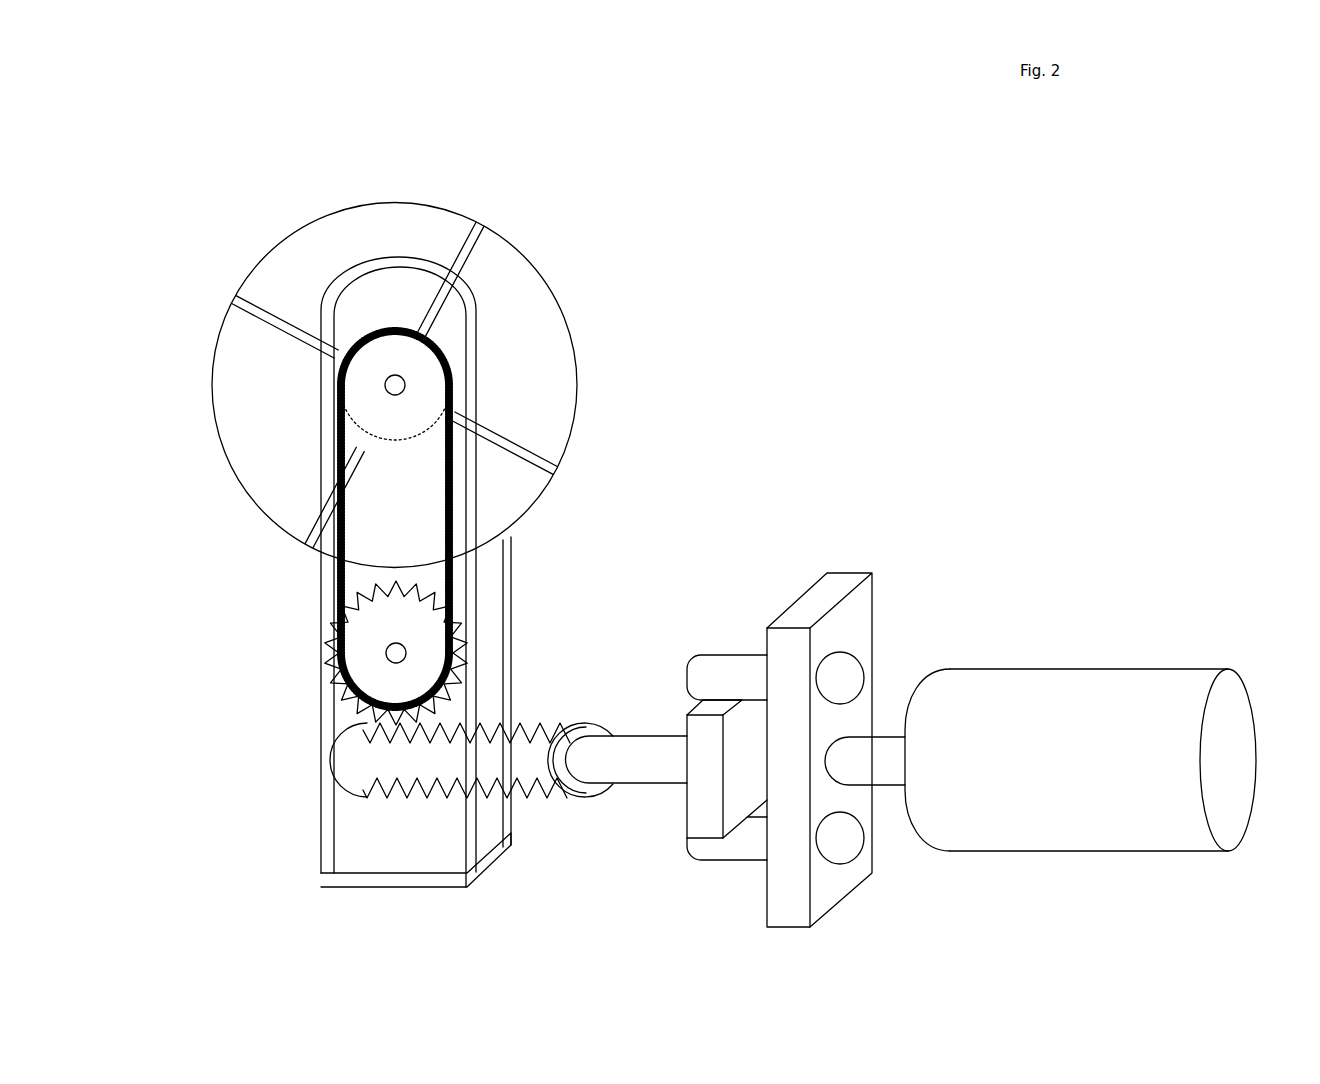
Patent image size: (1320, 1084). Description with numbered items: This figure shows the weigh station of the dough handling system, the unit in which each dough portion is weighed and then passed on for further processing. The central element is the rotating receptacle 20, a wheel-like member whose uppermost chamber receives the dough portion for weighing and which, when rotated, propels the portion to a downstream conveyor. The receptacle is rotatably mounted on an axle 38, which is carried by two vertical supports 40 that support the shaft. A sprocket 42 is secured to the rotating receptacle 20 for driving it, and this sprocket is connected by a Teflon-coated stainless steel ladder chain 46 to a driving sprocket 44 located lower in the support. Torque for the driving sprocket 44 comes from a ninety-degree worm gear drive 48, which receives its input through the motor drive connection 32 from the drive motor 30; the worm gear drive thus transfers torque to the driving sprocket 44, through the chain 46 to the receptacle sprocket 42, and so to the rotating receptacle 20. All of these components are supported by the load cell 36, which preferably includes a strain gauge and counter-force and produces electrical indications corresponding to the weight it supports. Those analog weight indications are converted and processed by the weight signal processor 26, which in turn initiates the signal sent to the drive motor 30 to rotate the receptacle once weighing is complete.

The rotating receptacle 20 is at (452, 208).
The weight signal processor 26 is at (632, 360).
The drive motor 30 is at (1050, 660).
The motor drive connection 32 is at (850, 553).
The load cell 36 is at (337, 872).
The axle 38 is at (390, 387).
The vertical supports 40 is at (513, 618).
The sprocket 42 is at (432, 370).
The driving sprocket 44 is at (353, 668).
The ladder chain 46 is at (448, 502).
The worm gear drive 48 is at (358, 722).